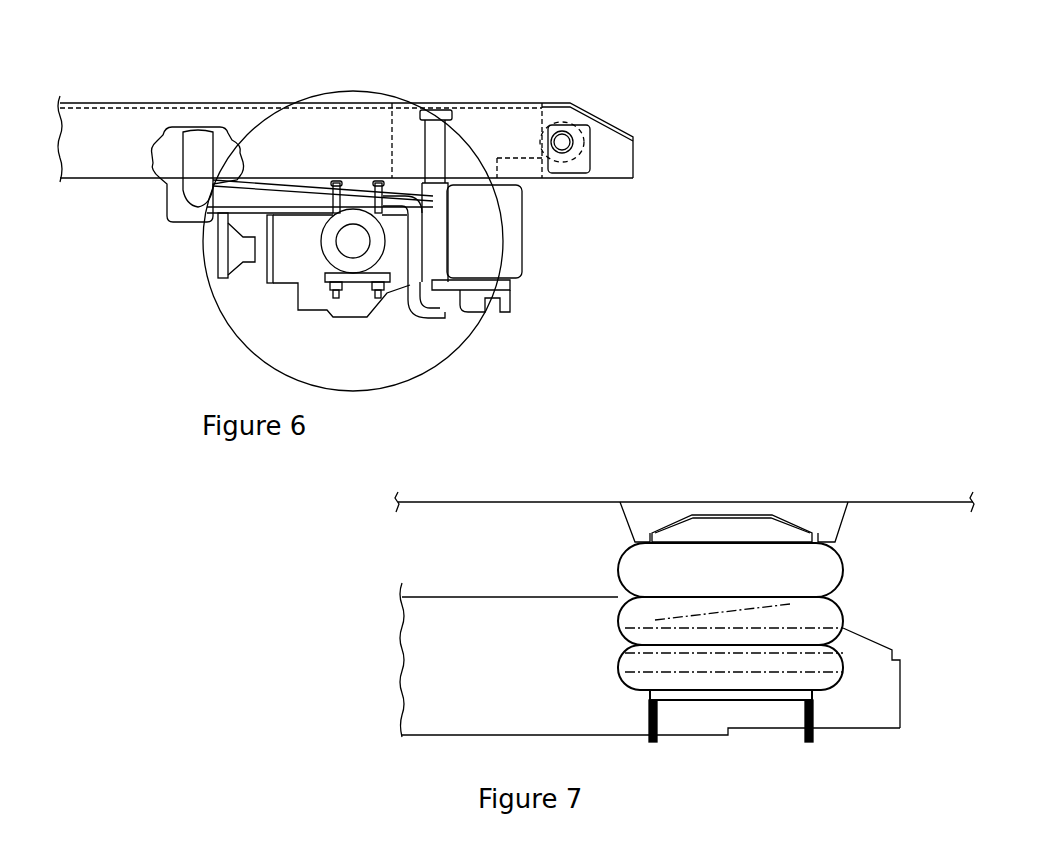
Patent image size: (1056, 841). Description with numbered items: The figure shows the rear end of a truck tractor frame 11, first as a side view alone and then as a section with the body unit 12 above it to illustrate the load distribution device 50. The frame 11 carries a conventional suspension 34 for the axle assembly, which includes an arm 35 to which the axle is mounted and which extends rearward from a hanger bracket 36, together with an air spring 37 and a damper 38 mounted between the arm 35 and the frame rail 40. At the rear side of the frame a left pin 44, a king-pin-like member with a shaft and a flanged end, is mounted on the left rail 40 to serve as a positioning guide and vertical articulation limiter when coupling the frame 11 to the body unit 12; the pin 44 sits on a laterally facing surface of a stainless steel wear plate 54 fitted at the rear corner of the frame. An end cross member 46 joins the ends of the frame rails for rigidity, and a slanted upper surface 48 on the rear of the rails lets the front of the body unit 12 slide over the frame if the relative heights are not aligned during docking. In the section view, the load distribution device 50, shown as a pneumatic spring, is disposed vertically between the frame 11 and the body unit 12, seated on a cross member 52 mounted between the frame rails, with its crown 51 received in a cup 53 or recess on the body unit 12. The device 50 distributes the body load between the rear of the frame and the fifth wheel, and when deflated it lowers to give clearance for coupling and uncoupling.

In FIG. 6, the truck tractor frame 11 is at (163, 104).
In FIG. 7, the truck tractor frame 11 is at (425, 593).
In FIG. 7, the body unit 12 is at (600, 502).
In FIG. 6, the suspension 34 is at (242, 306).
In FIG. 6, the arm 35 is at (445, 322).
In FIG. 6, the hanger bracket 36 is at (165, 210).
In FIG. 6, the air spring 37 is at (523, 260).
In FIG. 6, the damper 38 is at (447, 225).
In FIG. 6, the left frame rail 40 is at (275, 103).
In FIG. 6, the left pin 44 is at (570, 135).
In FIG. 6, the end cross member 46 is at (637, 158).
In FIG. 6, the slanted upper surface 48 is at (612, 123).
In FIG. 7, the slanted upper surface 48 is at (890, 628).
In FIG. 7, the load distribution device 50 is at (845, 565).
In FIG. 7, the crown 51 is at (793, 535).
In FIG. 7, the cross member 52 is at (813, 717).
In FIG. 7, the cup 53 is at (843, 525).
In FIG. 7, the wear plate 54 is at (820, 650).